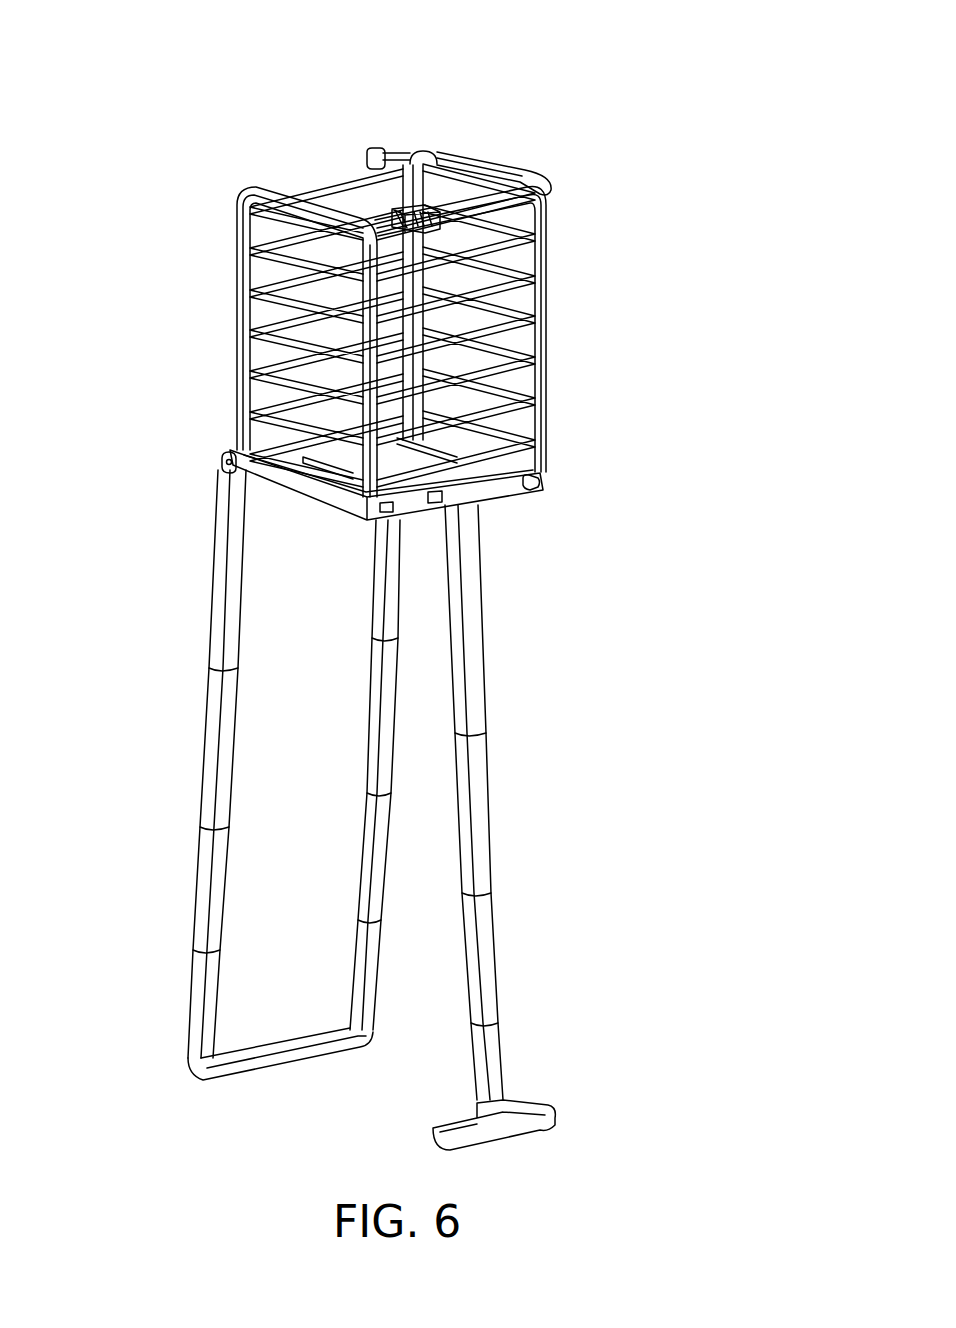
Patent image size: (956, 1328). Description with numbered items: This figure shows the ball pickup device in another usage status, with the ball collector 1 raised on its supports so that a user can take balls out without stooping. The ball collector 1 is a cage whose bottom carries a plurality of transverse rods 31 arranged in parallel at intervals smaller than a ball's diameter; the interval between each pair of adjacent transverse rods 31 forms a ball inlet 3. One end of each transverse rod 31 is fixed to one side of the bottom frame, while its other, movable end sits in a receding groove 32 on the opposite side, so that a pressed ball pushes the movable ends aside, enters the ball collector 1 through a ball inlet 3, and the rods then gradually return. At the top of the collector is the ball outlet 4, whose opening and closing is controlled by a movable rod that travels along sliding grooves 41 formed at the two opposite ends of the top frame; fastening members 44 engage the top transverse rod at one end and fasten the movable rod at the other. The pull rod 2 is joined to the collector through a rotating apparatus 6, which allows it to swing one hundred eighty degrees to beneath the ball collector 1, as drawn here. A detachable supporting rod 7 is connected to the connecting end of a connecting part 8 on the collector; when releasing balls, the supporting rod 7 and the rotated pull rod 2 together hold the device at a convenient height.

The ball collector 1 is at (237, 350).
The pull rod 2 is at (223, 715).
The ball inlet 3 is at (450, 524).
The ball outlet 4 is at (510, 119).
The rotating apparatus 6 is at (222, 463).
The supporting rod 7 is at (468, 655).
The connecting part 8 is at (475, 497).
The transverse rod 31 is at (352, 467).
The receding groove 32 is at (525, 482).
The sliding groove 41 is at (507, 177).
The fastening member 44 is at (382, 158).